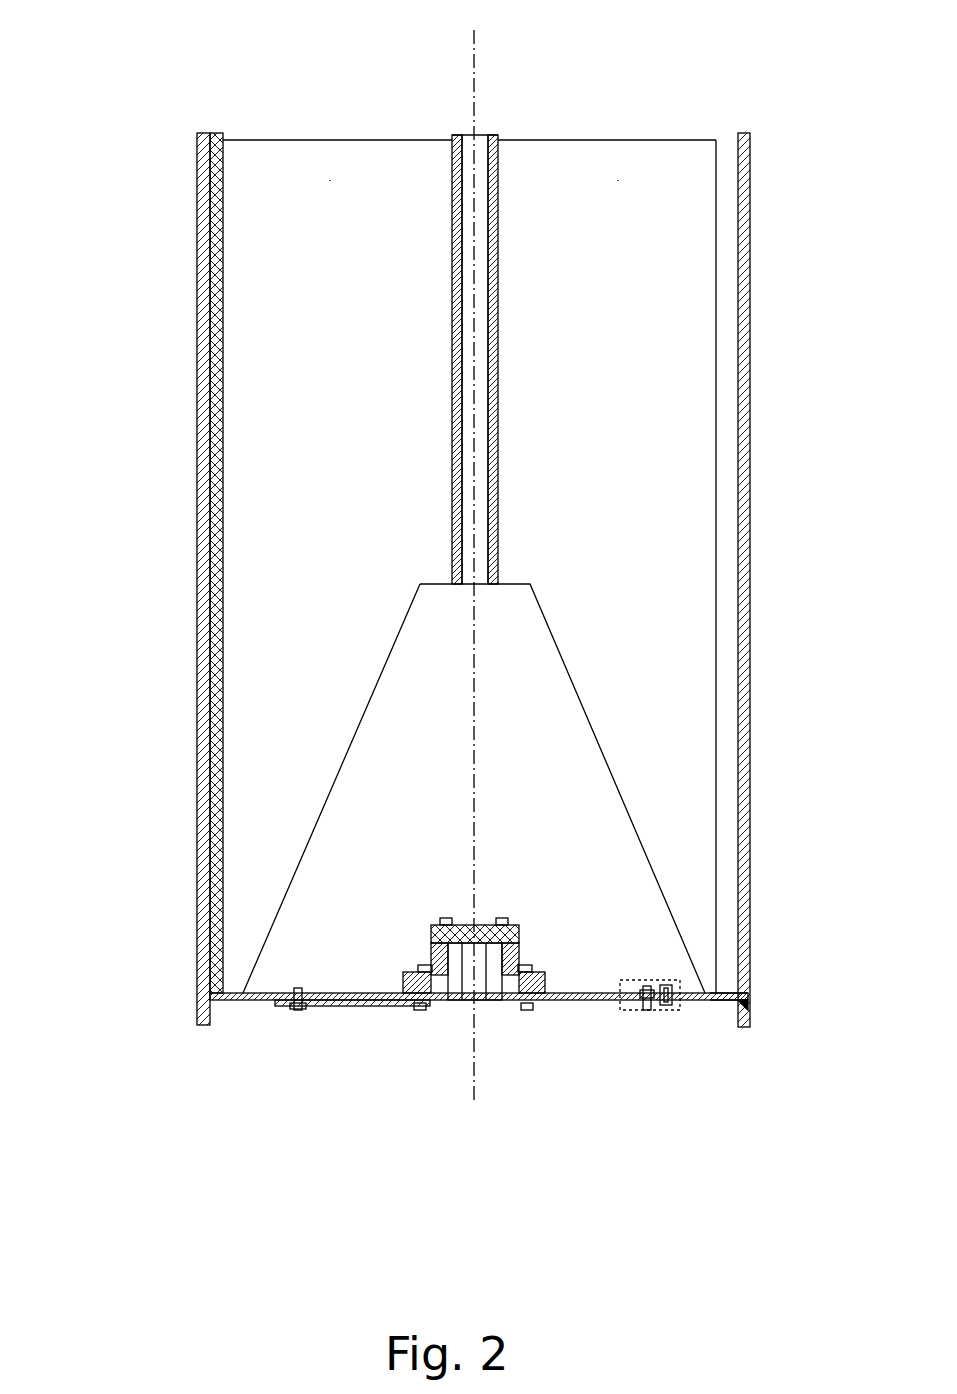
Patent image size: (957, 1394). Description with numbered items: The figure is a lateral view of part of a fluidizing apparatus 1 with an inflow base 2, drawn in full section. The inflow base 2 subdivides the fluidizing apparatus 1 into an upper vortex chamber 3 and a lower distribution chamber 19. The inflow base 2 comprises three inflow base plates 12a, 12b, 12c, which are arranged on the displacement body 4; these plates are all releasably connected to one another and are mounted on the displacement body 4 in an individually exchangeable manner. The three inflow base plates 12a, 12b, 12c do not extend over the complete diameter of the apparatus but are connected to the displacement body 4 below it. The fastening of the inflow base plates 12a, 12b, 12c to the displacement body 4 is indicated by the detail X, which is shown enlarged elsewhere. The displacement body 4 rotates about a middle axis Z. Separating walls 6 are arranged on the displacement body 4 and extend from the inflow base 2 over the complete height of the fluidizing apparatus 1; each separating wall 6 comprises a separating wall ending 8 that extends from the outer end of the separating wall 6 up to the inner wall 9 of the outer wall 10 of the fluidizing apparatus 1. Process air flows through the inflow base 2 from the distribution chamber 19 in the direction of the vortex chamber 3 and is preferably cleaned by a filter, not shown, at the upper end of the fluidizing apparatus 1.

The fluidizing apparatus 1 is at (150, 62).
The inflow base 2 is at (722, 1005).
The vortex chamber 3 is at (412, 879).
The displacement body 4 is at (575, 810).
The separating wall 6 is at (332, 180).
The separating wall ending 8 is at (218, 140).
The inner wall 9 is at (730, 893).
The outer wall 10 is at (745, 353).
The inflow base plate 12a is at (745, 993).
The inflow base plate 12b is at (746, 999).
The inflow base plate 12c is at (742, 1004).
The distribution chamber 19 is at (372, 1066).
The detail X is at (651, 1010).
The middle axis Z is at (472, 552).